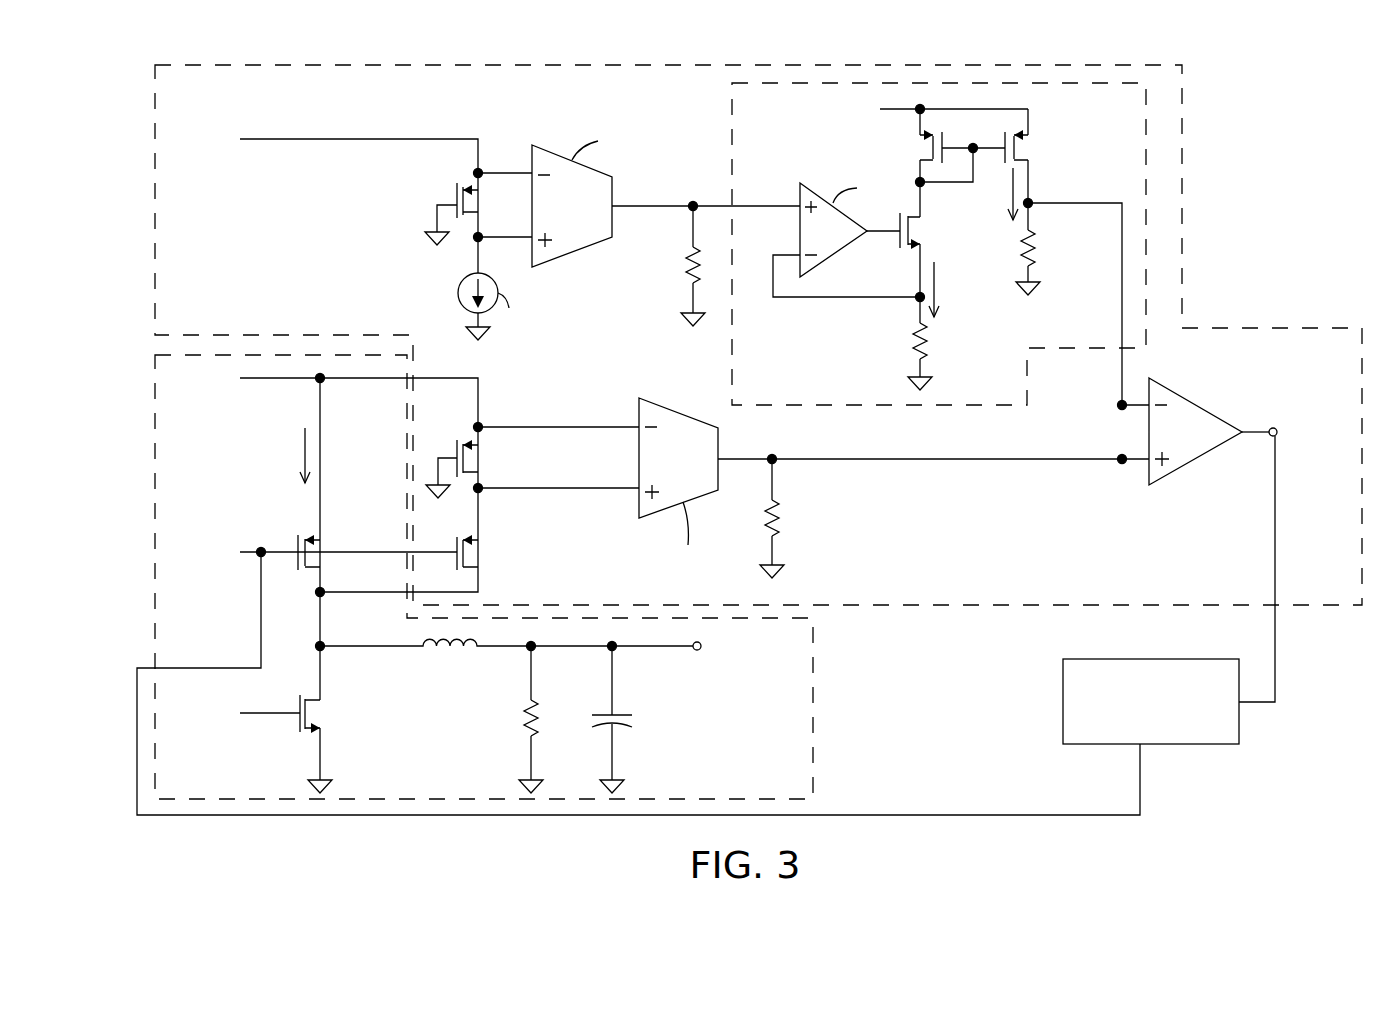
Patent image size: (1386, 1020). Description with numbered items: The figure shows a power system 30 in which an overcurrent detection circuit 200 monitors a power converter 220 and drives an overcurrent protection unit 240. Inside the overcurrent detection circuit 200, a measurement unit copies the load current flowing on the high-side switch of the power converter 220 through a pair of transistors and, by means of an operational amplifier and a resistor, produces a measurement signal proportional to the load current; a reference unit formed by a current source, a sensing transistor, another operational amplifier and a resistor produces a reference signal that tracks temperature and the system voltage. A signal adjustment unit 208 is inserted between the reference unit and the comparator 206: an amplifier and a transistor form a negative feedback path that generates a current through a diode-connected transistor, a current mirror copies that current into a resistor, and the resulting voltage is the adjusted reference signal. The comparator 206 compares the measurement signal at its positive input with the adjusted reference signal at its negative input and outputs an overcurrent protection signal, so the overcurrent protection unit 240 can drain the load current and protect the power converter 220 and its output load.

The power system 30 is at (1270, 108).
The overcurrent detection circuit 200 is at (1183, 165).
The signal adjustment unit 208 is at (1147, 220).
The comparator 206 is at (1197, 408).
The power converter 220 is at (815, 690).
The overcurrent protection unit 240 is at (1155, 659).